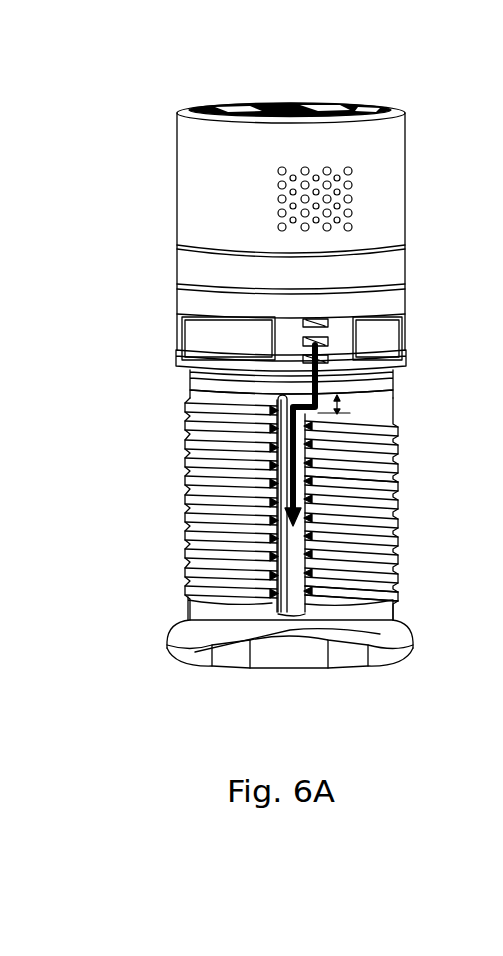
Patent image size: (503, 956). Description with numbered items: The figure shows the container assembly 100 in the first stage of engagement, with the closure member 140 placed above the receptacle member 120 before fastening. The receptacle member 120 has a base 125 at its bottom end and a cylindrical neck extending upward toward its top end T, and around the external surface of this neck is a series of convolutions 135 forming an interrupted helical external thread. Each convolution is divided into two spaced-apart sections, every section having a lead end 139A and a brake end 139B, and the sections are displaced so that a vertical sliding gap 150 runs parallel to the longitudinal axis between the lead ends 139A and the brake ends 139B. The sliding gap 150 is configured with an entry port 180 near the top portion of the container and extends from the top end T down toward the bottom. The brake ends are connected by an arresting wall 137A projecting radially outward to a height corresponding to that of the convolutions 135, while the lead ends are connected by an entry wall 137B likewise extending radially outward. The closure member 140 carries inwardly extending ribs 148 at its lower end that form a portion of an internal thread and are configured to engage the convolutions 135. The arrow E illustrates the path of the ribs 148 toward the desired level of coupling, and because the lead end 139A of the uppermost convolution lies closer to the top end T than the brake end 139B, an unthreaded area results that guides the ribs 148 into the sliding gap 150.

The container assembly 100 is at (134, 144).
The closure member 140 is at (140, 294).
The ribs 148 is at (330, 324).
The receptacle member 120 is at (144, 464).
The base 125 is at (289, 683).
The convolutions 135 is at (185, 405).
The arresting wall 137A is at (395, 569).
The entry wall 137B is at (195, 652).
The lead end 139A is at (277, 408).
The brake end 139B is at (398, 449).
The sliding gap 150 is at (288, 422).
The entry port 180 is at (383, 408).
The top end T is at (395, 372).
The arrow E is at (396, 481).